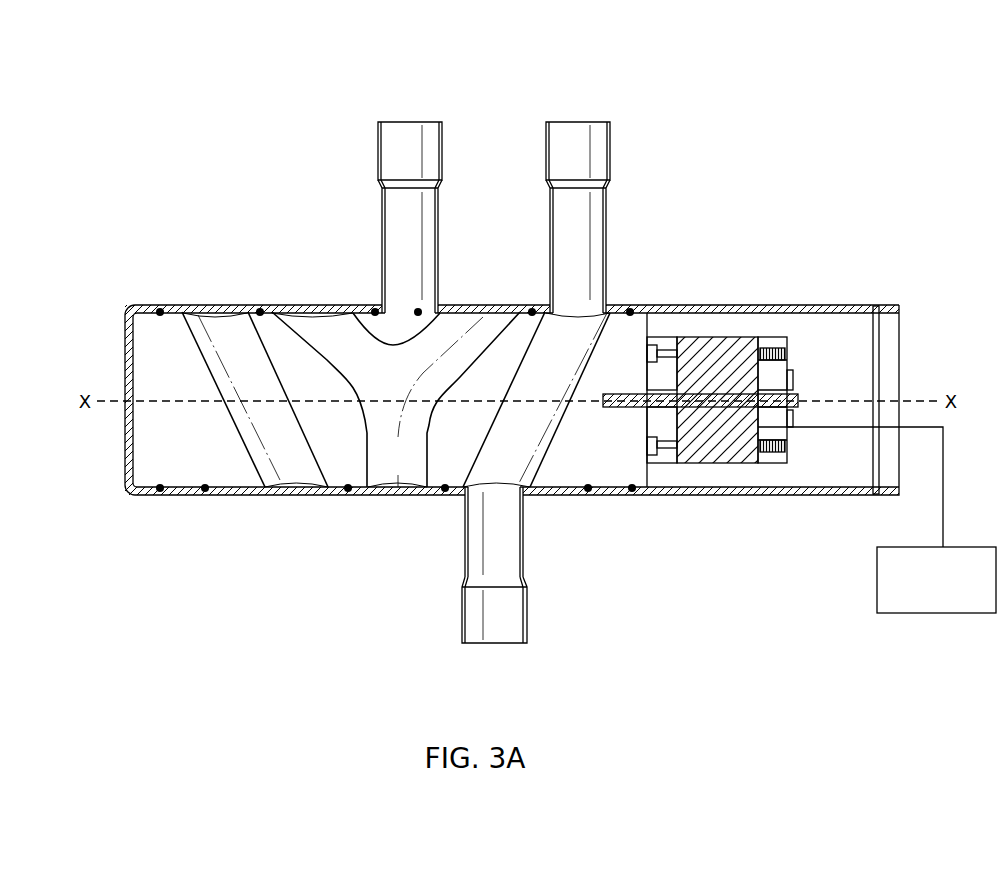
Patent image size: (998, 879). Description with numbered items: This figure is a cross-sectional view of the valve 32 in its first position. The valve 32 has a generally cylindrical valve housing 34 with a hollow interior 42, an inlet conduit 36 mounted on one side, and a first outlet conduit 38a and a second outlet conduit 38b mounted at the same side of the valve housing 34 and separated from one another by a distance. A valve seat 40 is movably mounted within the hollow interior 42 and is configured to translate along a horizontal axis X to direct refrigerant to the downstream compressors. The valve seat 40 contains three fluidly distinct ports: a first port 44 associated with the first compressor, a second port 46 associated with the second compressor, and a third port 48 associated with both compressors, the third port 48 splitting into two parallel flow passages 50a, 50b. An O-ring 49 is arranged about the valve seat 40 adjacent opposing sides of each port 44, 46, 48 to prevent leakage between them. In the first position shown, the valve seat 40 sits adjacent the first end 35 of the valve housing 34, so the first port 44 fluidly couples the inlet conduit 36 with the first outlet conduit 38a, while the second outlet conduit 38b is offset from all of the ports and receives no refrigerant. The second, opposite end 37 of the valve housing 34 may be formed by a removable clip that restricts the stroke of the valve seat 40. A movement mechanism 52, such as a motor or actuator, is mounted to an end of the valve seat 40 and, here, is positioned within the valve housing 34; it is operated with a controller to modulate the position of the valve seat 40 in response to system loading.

The valve 32 is at (519, 385).
The valve housing 34 is at (140, 497).
The first end 35 is at (125, 348).
The inlet conduit 36 is at (513, 613).
The second end 37 is at (878, 322).
The first outlet conduit 38a is at (600, 143).
The second outlet conduit 38b is at (402, 128).
The valve seat 40 is at (183, 480).
The hollow interior 42 is at (849, 325).
The first port 44 is at (520, 457).
The second port 46 is at (283, 473).
The third port 48 is at (397, 473).
The O-ring 49 is at (260, 310).
The first parallel flow passage 50a is at (478, 330).
The second parallel flow passage 50b is at (340, 325).
The movement mechanism 52 is at (717, 452).